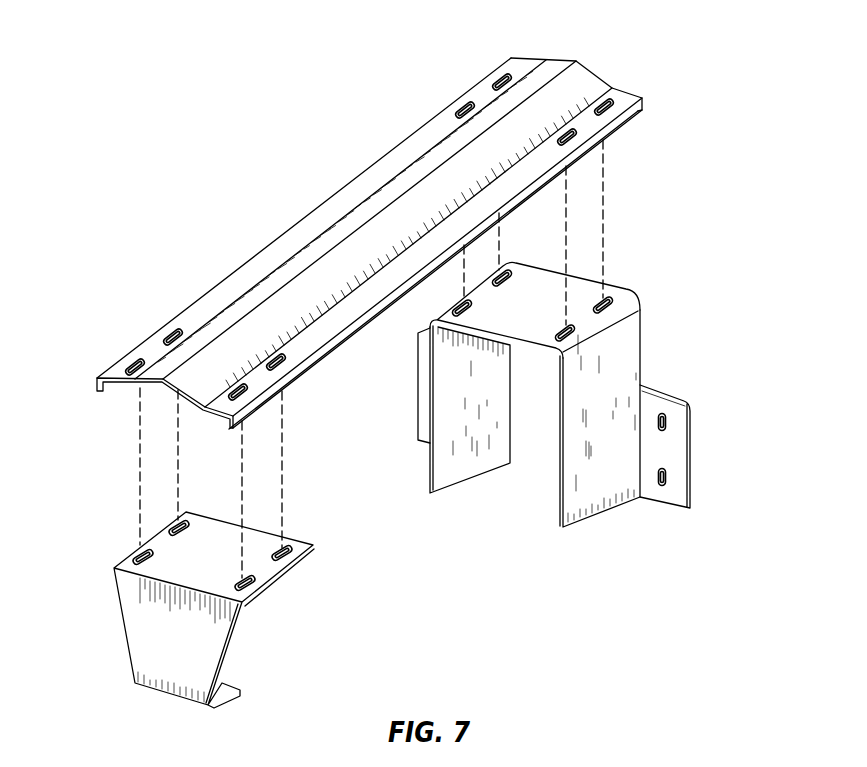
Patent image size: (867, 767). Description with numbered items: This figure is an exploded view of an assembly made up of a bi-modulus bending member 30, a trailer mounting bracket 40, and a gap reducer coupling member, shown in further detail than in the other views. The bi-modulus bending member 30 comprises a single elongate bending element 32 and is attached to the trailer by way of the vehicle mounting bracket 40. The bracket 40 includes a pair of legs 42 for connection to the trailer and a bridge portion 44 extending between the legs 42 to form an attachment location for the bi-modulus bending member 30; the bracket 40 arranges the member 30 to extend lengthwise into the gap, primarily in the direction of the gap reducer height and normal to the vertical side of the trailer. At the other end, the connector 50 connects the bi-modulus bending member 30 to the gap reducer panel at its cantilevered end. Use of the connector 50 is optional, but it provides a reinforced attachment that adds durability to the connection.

The bi-modulus bending member 30 is at (369, 228).
The single elongate bending element 32 is at (510, 60).
The vehicle mounting bracket 40 is at (536, 362).
The legs 42 is at (430, 469).
The bridge portion 44 is at (587, 287).
The connector 50 is at (285, 575).